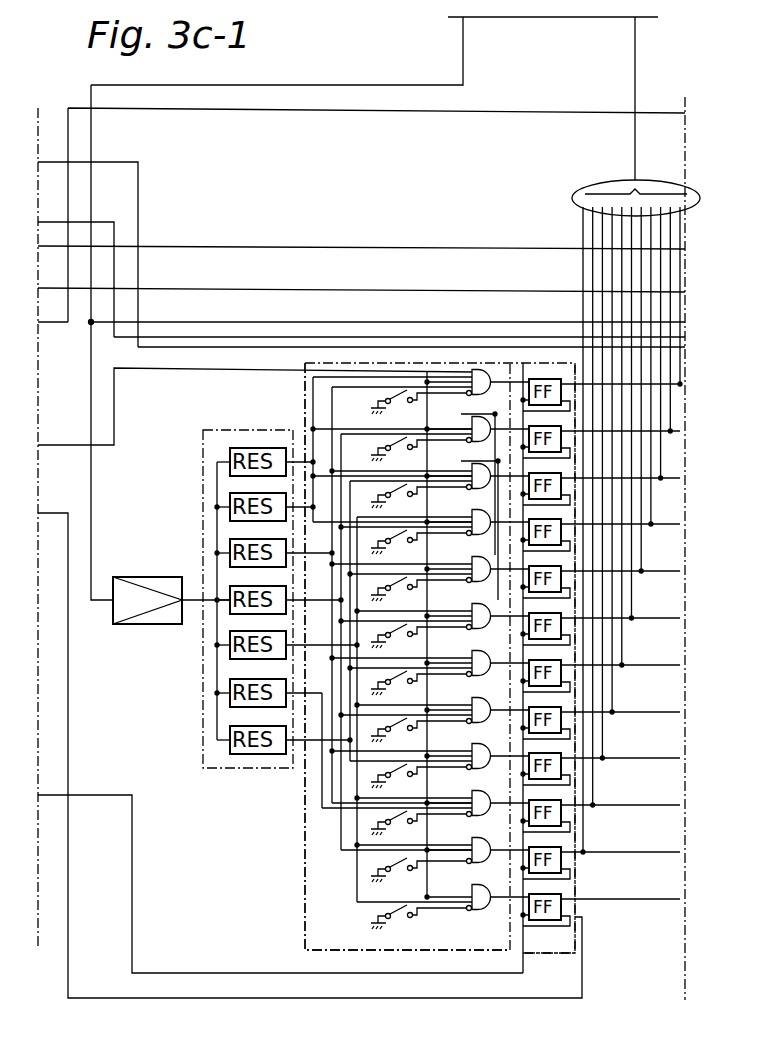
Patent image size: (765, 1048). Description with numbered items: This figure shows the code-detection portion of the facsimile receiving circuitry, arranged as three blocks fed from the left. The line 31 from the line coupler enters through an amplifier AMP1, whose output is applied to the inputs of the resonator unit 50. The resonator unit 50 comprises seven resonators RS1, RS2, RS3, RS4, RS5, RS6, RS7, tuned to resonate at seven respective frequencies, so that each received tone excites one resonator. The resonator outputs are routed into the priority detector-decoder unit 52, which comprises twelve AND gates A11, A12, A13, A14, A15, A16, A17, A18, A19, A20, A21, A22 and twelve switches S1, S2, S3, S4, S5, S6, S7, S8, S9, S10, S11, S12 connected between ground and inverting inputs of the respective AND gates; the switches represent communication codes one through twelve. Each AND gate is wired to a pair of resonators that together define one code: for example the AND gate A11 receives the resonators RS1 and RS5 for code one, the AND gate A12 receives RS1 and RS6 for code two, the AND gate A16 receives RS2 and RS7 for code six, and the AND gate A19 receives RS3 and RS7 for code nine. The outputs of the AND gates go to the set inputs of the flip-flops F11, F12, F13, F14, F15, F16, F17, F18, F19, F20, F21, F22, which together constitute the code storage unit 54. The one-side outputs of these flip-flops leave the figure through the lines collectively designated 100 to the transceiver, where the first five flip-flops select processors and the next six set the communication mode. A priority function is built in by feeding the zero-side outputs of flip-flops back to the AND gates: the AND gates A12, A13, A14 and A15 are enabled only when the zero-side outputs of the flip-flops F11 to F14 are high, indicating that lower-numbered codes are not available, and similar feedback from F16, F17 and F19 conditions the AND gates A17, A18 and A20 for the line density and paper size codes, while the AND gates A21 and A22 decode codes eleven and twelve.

The line 31 is at (287, 85).
The lines 100 is at (575, 197).
The resonator unit 50 is at (240, 770).
The priority detector-decoder unit 52 is at (305, 876).
The code storage unit 54 is at (562, 953).
The amplifier AMP1 is at (118, 625).
The resonator RS1 is at (230, 454).
The resonator RS2 is at (230, 499).
The resonator RS3 is at (230, 545).
The resonator RS4 is at (230, 590).
The resonator RS5 is at (230, 638).
The resonator RS6 is at (230, 686).
The resonator RS7 is at (230, 733).
The switch S1 is at (419, 410).
The switch S2 is at (419, 457).
The switch S3 is at (419, 504).
The switch S4 is at (419, 550).
The switch S5 is at (419, 597).
The switch S6 is at (419, 644).
The switch S7 is at (419, 691).
The switch S8 is at (419, 738).
The switch S9 is at (419, 784).
The switch S10 is at (419, 831).
The switch S11 is at (419, 878).
The switch S12 is at (419, 925).
The AND gate A11 is at (474, 369).
The AND gate A12 is at (471, 418).
The AND gate A13 is at (471, 465).
The AND gate A14 is at (471, 511).
The AND gate A15 is at (481, 560).
The AND gate A16 is at (472, 607).
The AND gate A17 is at (471, 652).
The AND gate A18 is at (478, 700).
The AND gate A19 is at (470, 740).
The AND gate A20 is at (471, 792).
The AND gate A21 is at (471, 839).
The AND gate A22 is at (471, 886).
The flip-flop F11 is at (563, 378).
The flip-flop F12 is at (561, 427).
The flip-flop F13 is at (561, 474).
The flip-flop F14 is at (561, 520).
The flip-flop F15 is at (561, 567).
The flip-flop F16 is at (561, 614).
The flip-flop F17 is at (561, 661).
The flip-flop F18 is at (561, 708).
The flip-flop F19 is at (561, 754).
The flip-flop F20 is at (561, 801).
The flip-flop F21 is at (561, 848).
The flip-flop F22 is at (561, 895).